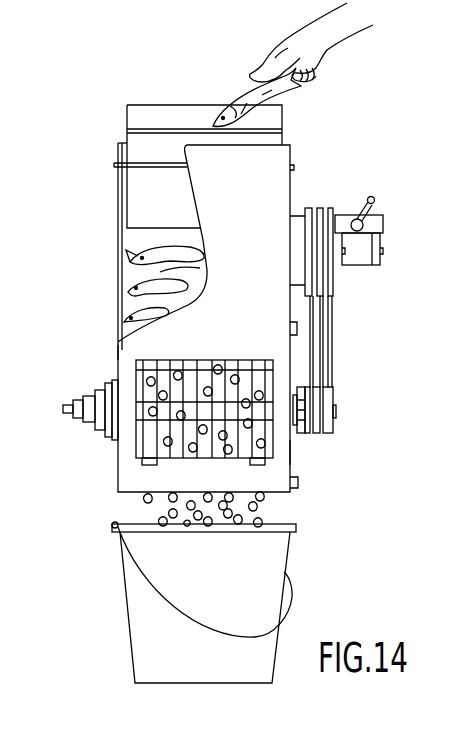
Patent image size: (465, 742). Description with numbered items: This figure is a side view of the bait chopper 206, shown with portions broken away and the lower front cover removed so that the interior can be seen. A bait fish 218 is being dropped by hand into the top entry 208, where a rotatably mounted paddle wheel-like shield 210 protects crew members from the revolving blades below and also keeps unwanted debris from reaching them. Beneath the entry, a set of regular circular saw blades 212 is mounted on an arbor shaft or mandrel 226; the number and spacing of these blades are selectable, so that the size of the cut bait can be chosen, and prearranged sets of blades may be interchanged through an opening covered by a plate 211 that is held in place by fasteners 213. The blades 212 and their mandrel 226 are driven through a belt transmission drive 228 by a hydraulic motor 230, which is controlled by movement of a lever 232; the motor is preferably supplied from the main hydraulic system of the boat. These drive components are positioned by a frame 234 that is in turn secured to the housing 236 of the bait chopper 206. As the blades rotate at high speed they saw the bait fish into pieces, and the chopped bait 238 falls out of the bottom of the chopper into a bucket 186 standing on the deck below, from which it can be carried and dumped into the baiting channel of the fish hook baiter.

The bucket 186 is at (280, 615).
The bait chopper 206 is at (118, 229).
The top entry 208 is at (117, 155).
The paddle wheel-like shield 210 is at (127, 122).
The plate 211 is at (296, 452).
The regular circular saw blades 212 is at (136, 448).
The fasteners 213 is at (298, 481).
The bait fish 218 is at (275, 92).
The arbor shaft or mandrel 226 is at (63, 407).
The belt transmission drive 228 is at (333, 369).
The hydraulic motor 230 is at (383, 262).
The lever 232 is at (375, 198).
The frame 234 is at (297, 214).
The housing 236 is at (117, 353).
The chopped bait 238 is at (258, 513).